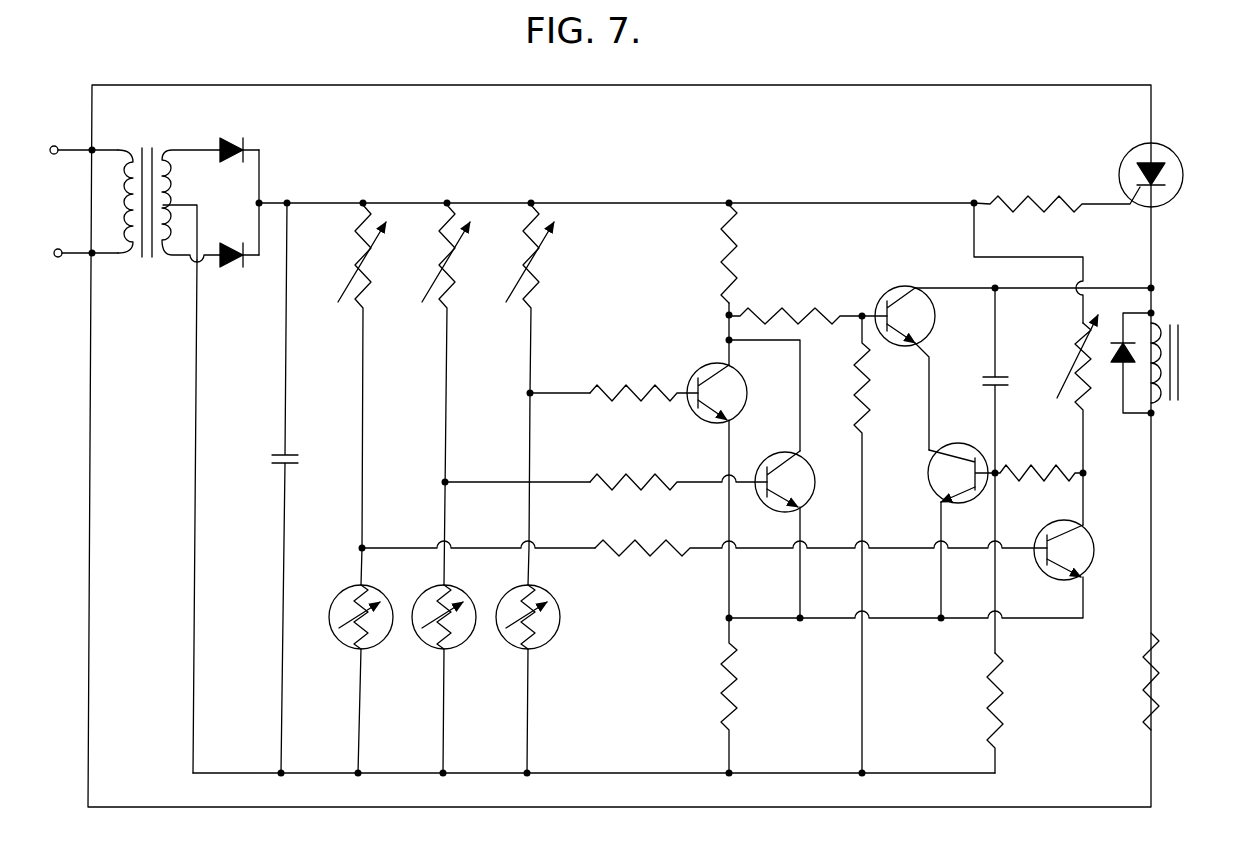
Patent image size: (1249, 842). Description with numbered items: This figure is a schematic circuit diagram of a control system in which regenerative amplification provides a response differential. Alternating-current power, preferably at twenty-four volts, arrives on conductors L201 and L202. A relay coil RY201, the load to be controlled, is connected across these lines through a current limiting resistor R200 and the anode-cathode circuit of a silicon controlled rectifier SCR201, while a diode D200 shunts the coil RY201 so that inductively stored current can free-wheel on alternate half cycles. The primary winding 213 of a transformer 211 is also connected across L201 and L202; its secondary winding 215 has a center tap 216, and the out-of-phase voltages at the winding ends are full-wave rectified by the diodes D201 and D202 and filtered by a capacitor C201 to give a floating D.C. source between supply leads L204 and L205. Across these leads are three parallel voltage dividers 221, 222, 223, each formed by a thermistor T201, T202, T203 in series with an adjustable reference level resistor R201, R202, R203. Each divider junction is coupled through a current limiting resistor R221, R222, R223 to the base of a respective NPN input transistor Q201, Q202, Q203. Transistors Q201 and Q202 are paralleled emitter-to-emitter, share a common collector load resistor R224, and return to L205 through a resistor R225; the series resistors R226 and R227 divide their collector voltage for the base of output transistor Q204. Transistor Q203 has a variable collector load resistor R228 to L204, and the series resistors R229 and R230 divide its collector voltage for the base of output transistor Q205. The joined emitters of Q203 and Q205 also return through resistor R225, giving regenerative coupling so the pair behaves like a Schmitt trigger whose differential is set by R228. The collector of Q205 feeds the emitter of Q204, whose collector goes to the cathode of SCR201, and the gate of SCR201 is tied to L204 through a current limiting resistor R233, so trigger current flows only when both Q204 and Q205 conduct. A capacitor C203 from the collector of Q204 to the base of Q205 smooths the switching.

The conductor L201 is at (75, 148).
The conductor L202 is at (72, 257).
The primary winding 213 is at (113, 204).
The transformer 211 is at (149, 146).
The secondary winding 215 is at (178, 171).
The center tap 216 is at (187, 206).
The diode D201 is at (238, 144).
The diode D202 is at (227, 268).
The supply lead L204 is at (412, 203).
The capacitor C201 is at (280, 452).
The adjustable reference level resistor R203 is at (358, 258).
The adjustable reference level resistor R202 is at (447, 263).
The adjustable reference level resistor R201 is at (535, 263).
The thermistor T201 is at (562, 606).
The thermistor T202 is at (455, 646).
The thermistor T203 is at (378, 645).
The voltage divider 221 is at (534, 347).
The voltage divider 222 is at (450, 430).
The voltage divider 223 is at (430, 462).
The current limiting resistor R221 is at (636, 388).
The current limiting resistor R222 is at (630, 476).
The current limiting resistor R223 is at (636, 544).
The common collector load resistor R224 is at (740, 263).
The resistor R226 is at (793, 312).
The resistor R227 is at (858, 379).
The input transistor Q201 is at (705, 368).
The input transistor Q202 is at (771, 455).
The output transistor Q204 is at (890, 287).
The output transistor Q205 is at (929, 480).
The input transistor Q203 is at (1092, 553).
The capacitor C203 is at (990, 376).
The variable collector load resistor R228 is at (1070, 352).
The resistor R229 is at (1038, 461).
The current limiting resistor R233 is at (1032, 196).
The silicon controlled rectifier SCR201 is at (1177, 189).
The diode D200 is at (1117, 366).
The relay coil RY201 is at (1180, 350).
The resistor R225 is at (723, 697).
The resistor R230 is at (1003, 698).
The current limiting resistor R200 is at (1160, 684).
The supply lead L205 is at (243, 772).